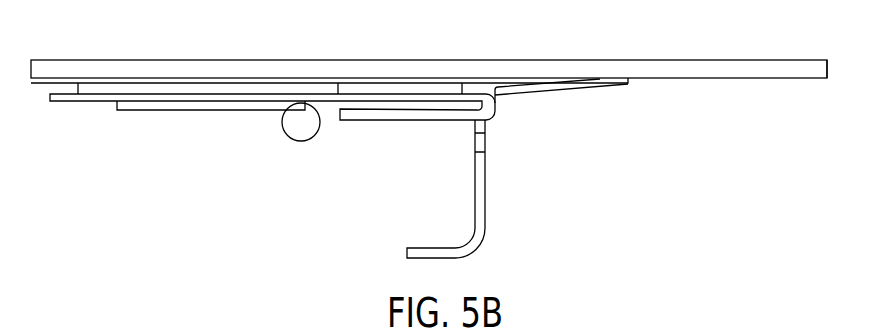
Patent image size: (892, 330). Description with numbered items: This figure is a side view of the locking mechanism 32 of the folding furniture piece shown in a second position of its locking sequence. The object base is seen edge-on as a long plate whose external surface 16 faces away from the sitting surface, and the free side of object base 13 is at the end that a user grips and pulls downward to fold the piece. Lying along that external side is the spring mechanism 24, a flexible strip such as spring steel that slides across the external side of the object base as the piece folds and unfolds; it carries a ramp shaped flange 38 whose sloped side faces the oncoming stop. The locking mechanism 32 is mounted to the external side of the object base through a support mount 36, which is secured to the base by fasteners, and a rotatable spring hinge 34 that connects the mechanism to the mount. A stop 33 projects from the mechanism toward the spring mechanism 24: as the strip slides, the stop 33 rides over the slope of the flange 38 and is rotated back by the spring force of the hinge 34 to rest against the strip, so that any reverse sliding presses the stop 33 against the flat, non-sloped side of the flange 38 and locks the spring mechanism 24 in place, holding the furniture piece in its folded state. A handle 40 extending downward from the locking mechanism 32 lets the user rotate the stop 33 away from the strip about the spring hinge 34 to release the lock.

The free side of object base 13 is at (826, 72).
The external surface 16 is at (673, 83).
The spring mechanism 24 is at (612, 84).
The locking mechanism 32 is at (380, 181).
The stop 33 is at (497, 96).
The rotatable spring hinge 34 is at (303, 136).
The support mount 36 is at (98, 102).
The ramp shaped flange 38 is at (537, 96).
The handle 40 is at (482, 214).